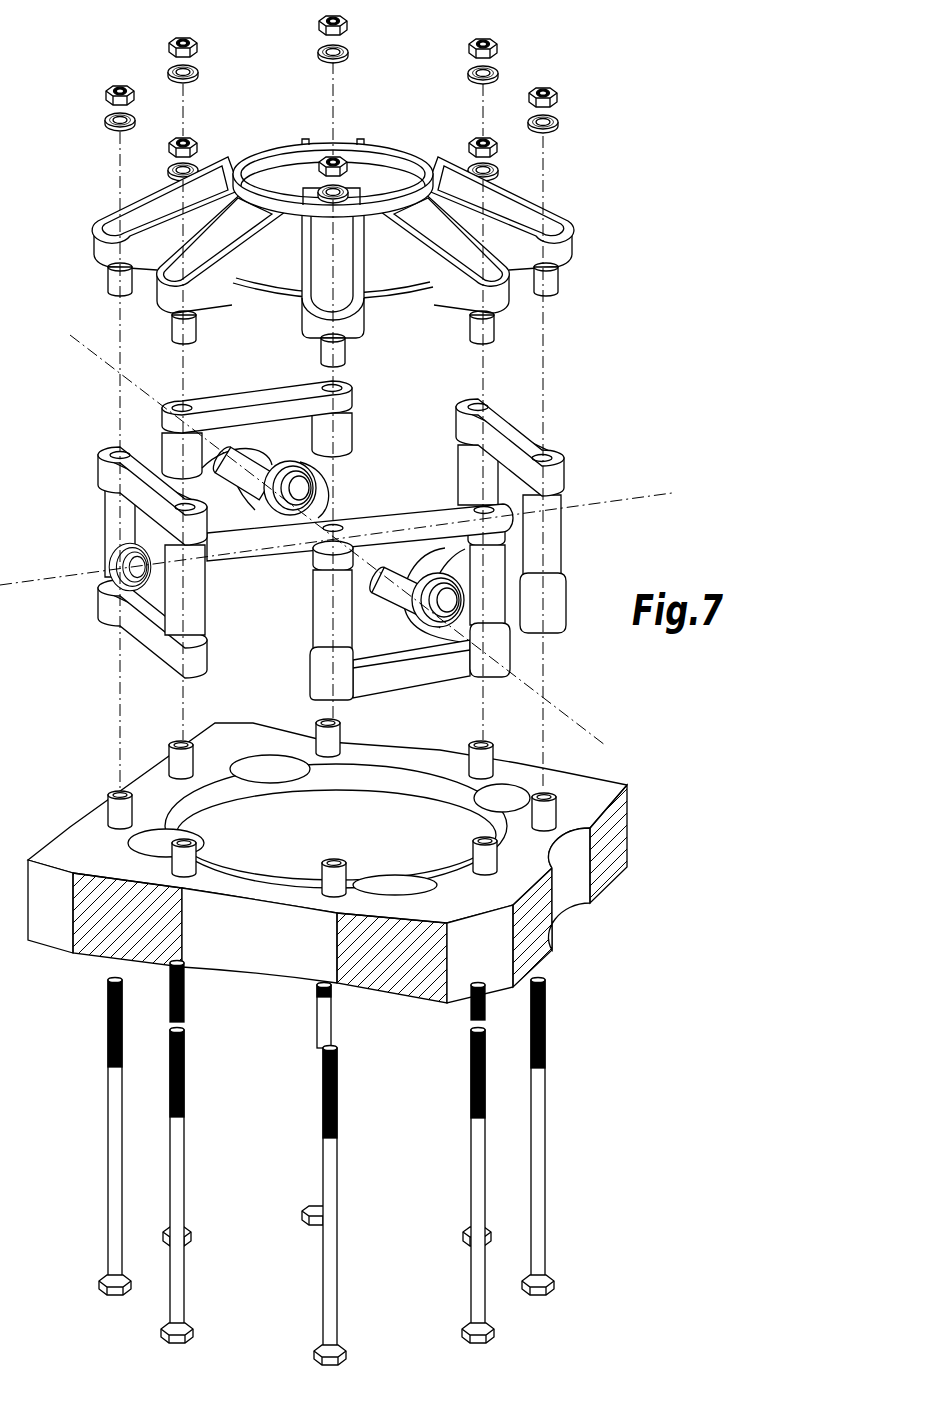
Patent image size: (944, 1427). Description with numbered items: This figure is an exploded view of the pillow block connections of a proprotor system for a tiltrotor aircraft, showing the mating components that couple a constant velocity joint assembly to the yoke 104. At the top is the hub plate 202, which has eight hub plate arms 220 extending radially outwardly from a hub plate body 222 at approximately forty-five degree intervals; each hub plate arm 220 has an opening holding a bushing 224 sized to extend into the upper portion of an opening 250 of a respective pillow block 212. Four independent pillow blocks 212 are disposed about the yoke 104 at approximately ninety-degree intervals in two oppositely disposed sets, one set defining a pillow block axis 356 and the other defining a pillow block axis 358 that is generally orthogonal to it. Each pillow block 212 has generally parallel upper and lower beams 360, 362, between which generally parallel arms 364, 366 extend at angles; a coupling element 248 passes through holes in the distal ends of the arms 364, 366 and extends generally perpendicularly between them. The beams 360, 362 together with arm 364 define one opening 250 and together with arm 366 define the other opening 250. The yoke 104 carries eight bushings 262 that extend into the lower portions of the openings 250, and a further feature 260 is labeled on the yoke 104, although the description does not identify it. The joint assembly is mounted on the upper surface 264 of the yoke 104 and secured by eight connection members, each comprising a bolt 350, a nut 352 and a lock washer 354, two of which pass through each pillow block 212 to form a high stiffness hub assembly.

The nut 352 is at (557, 100).
The lock washer 354 is at (560, 125).
The hub plate 202 is at (375, 253).
The hub plate arm 220 is at (540, 247).
The bushing 224 is at (548, 283).
The hub plate body 222 is at (386, 255).
The upper beam 360 is at (243, 396).
The arm 364 is at (287, 405).
The arm 366 is at (320, 455).
The opening 250 is at (112, 448).
The pillow block 212 is at (556, 478).
The pillow block axis 356 is at (605, 505).
The lower beam 362 is at (250, 567).
The pillow block axis 358 is at (515, 683).
The coupling element 248 is at (392, 593).
The bore 260 is at (170, 810).
The upper surface 264 is at (600, 790).
The bushing 262 is at (600, 822).
The yoke 104 is at (366, 861).
The bolt 350 is at (545, 1185).